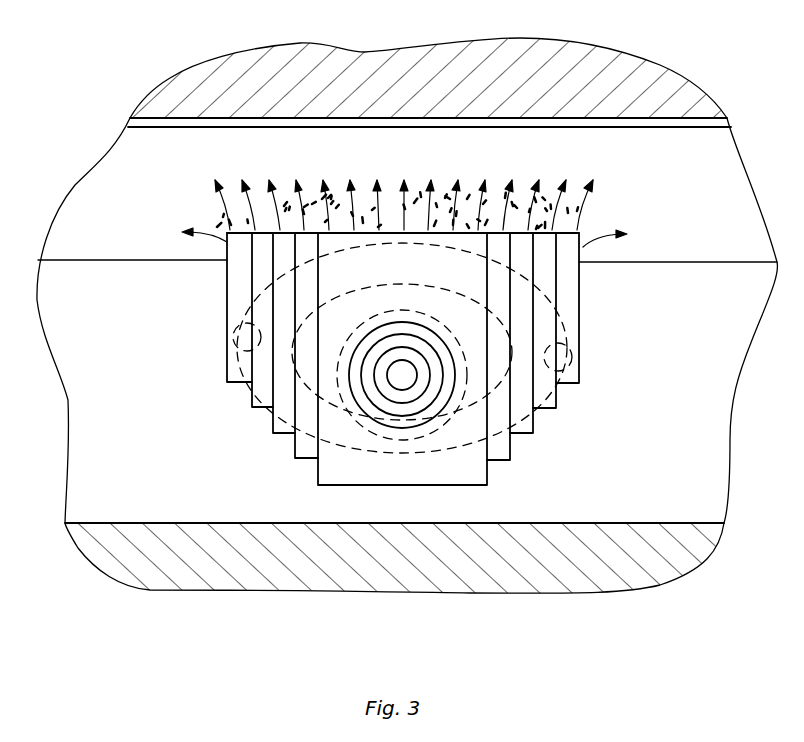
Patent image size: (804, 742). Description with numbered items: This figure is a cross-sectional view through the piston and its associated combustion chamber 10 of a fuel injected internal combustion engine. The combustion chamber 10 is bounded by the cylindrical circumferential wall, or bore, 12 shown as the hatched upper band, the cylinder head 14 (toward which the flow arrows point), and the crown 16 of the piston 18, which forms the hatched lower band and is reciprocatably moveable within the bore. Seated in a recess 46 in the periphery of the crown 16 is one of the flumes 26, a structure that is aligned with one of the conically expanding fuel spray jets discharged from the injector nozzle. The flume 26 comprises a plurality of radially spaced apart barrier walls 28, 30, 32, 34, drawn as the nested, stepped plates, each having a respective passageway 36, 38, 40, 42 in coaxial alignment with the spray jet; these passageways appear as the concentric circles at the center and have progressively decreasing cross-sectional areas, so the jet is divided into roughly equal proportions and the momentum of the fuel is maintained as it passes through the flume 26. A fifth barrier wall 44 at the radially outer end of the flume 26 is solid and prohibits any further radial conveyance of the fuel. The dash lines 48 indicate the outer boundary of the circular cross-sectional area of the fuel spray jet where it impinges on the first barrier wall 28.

The combustion chamber 10 is at (100, 147).
The cylindrical circumferential wall 12 is at (432, 164).
The cylinder head 14 is at (365, 50).
The crown 16 is at (665, 474).
The piston 18 is at (370, 590).
The flume 26 is at (206, 311).
The first barrier wall 28 is at (488, 486).
The barrier wall 30 is at (510, 456).
The barrier wall 32 is at (533, 420).
The barrier wall 34 is at (557, 395).
The passageway 36 is at (353, 401).
The passageway 38 is at (368, 413).
The passageway 40 is at (393, 403).
The passageway 42 is at (402, 390).
The fifth barrier wall 44 is at (578, 355).
The recess 46 is at (226, 364).
The dash lines 48 is at (402, 308).